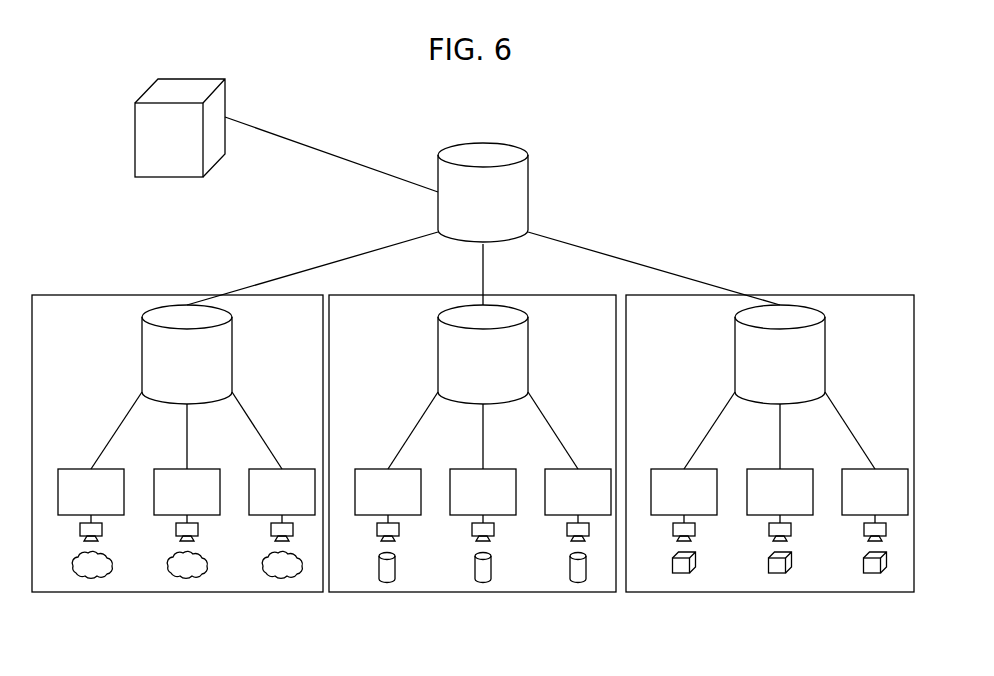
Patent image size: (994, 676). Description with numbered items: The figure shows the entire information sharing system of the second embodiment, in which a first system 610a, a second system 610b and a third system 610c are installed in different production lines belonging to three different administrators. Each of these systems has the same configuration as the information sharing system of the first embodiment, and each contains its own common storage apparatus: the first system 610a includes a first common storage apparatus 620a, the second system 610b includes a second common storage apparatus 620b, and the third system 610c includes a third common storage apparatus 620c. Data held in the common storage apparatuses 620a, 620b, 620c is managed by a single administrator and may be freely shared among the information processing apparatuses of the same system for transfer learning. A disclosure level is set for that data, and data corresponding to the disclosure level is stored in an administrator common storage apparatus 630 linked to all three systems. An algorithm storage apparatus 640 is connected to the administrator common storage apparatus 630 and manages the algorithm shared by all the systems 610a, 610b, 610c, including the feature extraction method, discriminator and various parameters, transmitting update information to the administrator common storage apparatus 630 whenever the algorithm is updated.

The first system 610a is at (177, 468).
The second system 610b is at (472, 468).
The third system 610c is at (770, 468).
The first common storage apparatus 620a is at (142, 350).
The second common storage apparatus 620b is at (438, 350).
The third common storage apparatus 620c is at (735, 350).
The administrator common storage apparatus 630 is at (528, 190).
The algorithm storage apparatus 640 is at (135, 138).